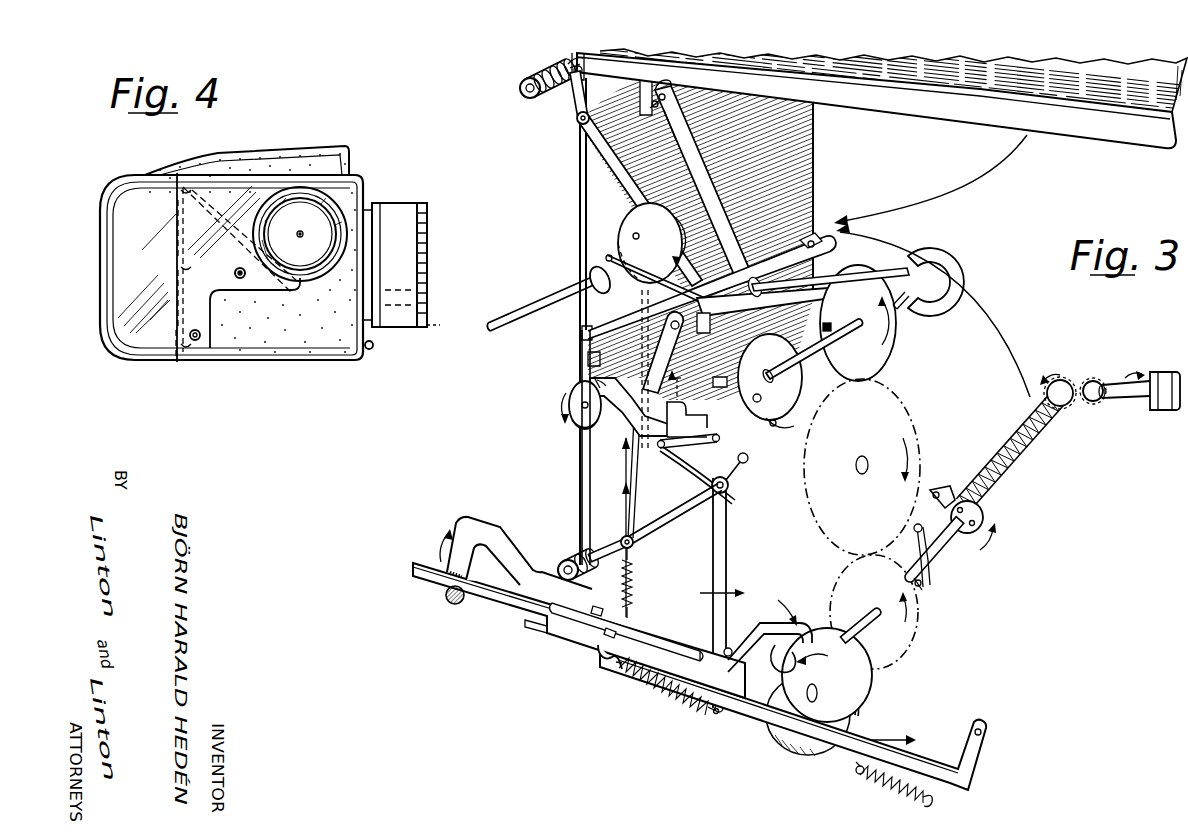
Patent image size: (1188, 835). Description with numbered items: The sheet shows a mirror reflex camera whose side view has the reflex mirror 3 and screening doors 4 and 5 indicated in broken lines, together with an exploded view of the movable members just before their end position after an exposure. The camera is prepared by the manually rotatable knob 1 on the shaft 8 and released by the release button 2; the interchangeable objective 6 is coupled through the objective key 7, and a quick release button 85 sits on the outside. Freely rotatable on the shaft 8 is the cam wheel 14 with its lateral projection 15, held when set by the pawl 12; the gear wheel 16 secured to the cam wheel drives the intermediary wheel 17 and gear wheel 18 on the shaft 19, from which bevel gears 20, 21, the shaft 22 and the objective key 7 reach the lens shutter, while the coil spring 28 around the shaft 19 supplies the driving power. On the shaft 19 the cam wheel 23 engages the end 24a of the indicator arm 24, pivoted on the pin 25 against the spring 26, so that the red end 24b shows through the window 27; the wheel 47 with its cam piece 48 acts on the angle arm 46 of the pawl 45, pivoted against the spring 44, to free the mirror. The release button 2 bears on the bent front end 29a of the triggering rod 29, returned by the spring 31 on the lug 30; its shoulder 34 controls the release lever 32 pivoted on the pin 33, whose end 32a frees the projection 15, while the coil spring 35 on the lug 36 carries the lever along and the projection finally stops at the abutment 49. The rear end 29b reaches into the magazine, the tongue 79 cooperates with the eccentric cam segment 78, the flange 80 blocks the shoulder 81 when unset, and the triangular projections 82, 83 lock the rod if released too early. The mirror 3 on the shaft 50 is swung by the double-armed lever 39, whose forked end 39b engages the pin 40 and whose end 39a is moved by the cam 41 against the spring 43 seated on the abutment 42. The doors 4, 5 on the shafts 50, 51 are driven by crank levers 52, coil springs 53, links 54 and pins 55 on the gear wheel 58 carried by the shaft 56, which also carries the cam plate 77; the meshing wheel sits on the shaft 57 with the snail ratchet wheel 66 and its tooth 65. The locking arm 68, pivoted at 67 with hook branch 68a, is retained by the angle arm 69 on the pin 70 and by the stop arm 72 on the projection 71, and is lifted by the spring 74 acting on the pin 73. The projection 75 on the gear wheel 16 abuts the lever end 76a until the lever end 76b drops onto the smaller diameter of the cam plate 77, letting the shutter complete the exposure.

In FIG. 4, the manually rotatable knob 1 is at (318, 212).
In FIG. 4, the release button 2 is at (372, 350).
In FIG. 4, the reflex mirror 3 is at (210, 210).
In FIG. 3, the reflex mirror 3 is at (1118, 130).
In FIG. 4, the screening door 4 is at (176, 232).
In FIG. 3, the screening door 4 is at (585, 190).
In FIG. 4, the screening door 5 is at (176, 297).
In FIG. 3, the screening door 5 is at (582, 466).
In FIG. 4, the interchangeable objective 6 is at (398, 220).
In FIG. 3, the objective key 7 is at (1158, 410).
In FIG. 3, the shaft 8 is at (904, 300).
In FIG. 3, the pawl 12 is at (800, 400).
In FIG. 3, the cam wheel 14 is at (822, 352).
In FIG. 3, the lateral projection 15 is at (762, 398).
In FIG. 3, the gear wheel 16 is at (890, 360).
In FIG. 3, the intermediary wheel 17 is at (905, 413).
In FIG. 3, the gear wheel 18 is at (905, 640).
In FIG. 3, the shaft 19 is at (932, 570).
In FIG. 3, the bevel gear 20 is at (1068, 380).
In FIG. 3, the bevel gear 21 is at (1093, 378).
In FIG. 3, the shaft 22 is at (1120, 398).
In FIG. 3, the cam wheel 23 is at (852, 676).
In FIG. 3, the indicator arm 24 is at (652, 624).
In FIG. 3, the indicator arm end 24a is at (752, 622).
In FIG. 3, the indicator arm end 24b is at (446, 600).
In FIG. 3, the pin 25 is at (732, 648).
In FIG. 3, the spring 26 is at (635, 587).
In FIG. 4, the window 27 is at (198, 342).
In FIG. 3, the coil spring 28 is at (1030, 440).
In FIG. 3, the triggering rod 29 is at (718, 712).
In FIG. 3, the bent front end of triggering rod 29a is at (985, 747).
In FIG. 3, the rear end of triggering rod 29b is at (418, 560).
In FIG. 3, the lug 30 is at (855, 772).
In FIG. 3, the spring 31 is at (892, 790).
In FIG. 3, the release lever 32 is at (727, 558).
In FIG. 3, the release lever end 32a is at (720, 377).
In FIG. 3, the pin 33 is at (730, 495).
In FIG. 3, the shoulder 34 is at (700, 650).
In FIG. 3, the coil spring 35 is at (664, 700).
In FIG. 3, the lug 36 is at (614, 670).
In FIG. 3, the double-armed lever 39 is at (705, 178).
In FIG. 3, the lever end 39a is at (900, 268).
In FIG. 3, the forked lever end 39b is at (668, 122).
In FIG. 3, the pin 40 is at (650, 108).
In FIG. 3, the cam 41 is at (940, 258).
In FIG. 3, the abutment 42 is at (816, 232).
In FIG. 3, the spring 43 is at (840, 238).
In FIG. 3, the spring 44 is at (922, 588).
In FIG. 3, the pawl 45 is at (938, 488).
In FIG. 3, the angle arm 46 is at (970, 535).
In FIG. 3, the wheel 47 is at (985, 512).
In FIG. 3, the cam piece 48 is at (950, 500).
In FIG. 3, the abutment 49 is at (778, 428).
In FIG. 4, the shaft 50 is at (178, 168).
In FIG. 3, the shaft 50 is at (572, 60).
In FIG. 4, the shaft 51 is at (178, 355).
In FIG. 3, the shaft 51 is at (668, 522).
In FIG. 3, the crank lever 52 is at (575, 110).
In FIG. 3, the coil spring 53 is at (548, 68).
In FIG. 3, the link 54 is at (596, 165).
In FIG. 3, the pin 55 is at (582, 332).
In FIG. 3, the shaft 56 is at (530, 310).
In FIG. 3, the shaft 57 is at (588, 358).
In FIG. 3, the gear wheel 58 is at (668, 215).
In FIG. 3, the ratchet tooth 65 is at (569, 400).
In FIG. 3, the snail ratchet wheel 66 is at (583, 428).
In FIG. 3, the pivot 67 is at (748, 464).
In FIG. 3, the locking arm 68 is at (634, 440).
In FIG. 3, the fork branch 68a is at (594, 381).
In FIG. 3, the angle arm 69 is at (690, 425).
In FIG. 3, the lateral pin 70 is at (624, 470).
In FIG. 3, the projection 71 is at (678, 390).
In FIG. 3, the stop arm 72 is at (682, 350).
In FIG. 3, the pin 73 is at (695, 446).
In FIG. 3, the spring 74 is at (670, 462).
In FIG. 3, the lateral projection 75 is at (830, 323).
In FIG. 3, the lever end 76a is at (838, 280).
In FIG. 3, the lever end 76b is at (610, 258).
In FIG. 3, the cam plate 77 is at (590, 275).
In FIG. 3, the eccentric cam segment 78 is at (862, 708).
In FIG. 3, the tongue 79 is at (782, 672).
In FIG. 3, the flanged portion 80 is at (524, 626).
In FIG. 3, the shoulder 81 is at (545, 634).
In FIG. 3, the triangular projection 82 is at (608, 636).
In FIG. 3, the triangular projection 83 is at (594, 615).
In FIG. 4, the quick release button 85 is at (236, 270).